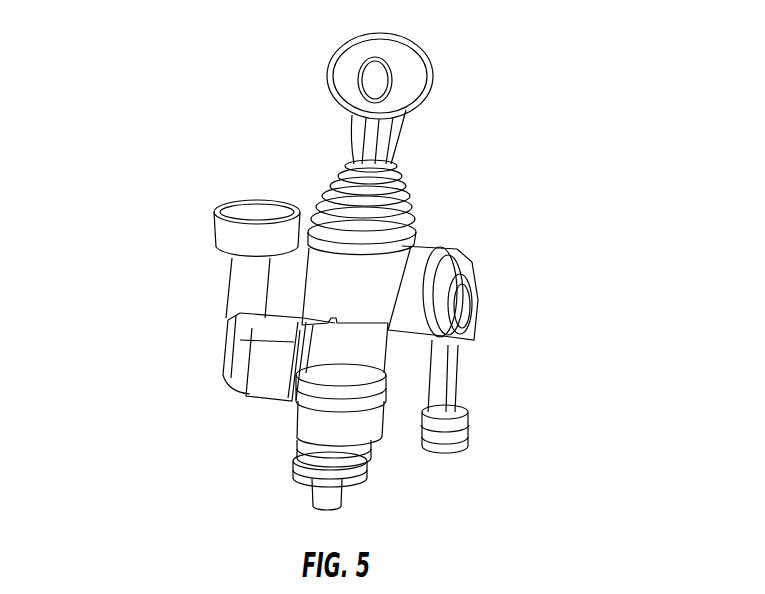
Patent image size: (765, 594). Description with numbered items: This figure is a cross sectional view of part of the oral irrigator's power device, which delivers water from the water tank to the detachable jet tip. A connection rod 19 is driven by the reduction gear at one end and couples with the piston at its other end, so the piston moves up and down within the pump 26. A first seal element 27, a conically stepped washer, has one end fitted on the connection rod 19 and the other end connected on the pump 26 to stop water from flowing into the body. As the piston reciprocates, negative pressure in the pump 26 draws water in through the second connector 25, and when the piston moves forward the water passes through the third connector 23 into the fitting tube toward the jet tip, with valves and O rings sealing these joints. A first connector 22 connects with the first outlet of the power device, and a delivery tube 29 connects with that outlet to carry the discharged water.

The connection rod 19 is at (417, 92).
The first seal element 27 is at (330, 193).
The third connector 23 is at (243, 238).
The first connector 22 is at (367, 288).
The pump 26 is at (330, 358).
The delivery tube 29 is at (463, 373).
The second connector 25 is at (326, 434).